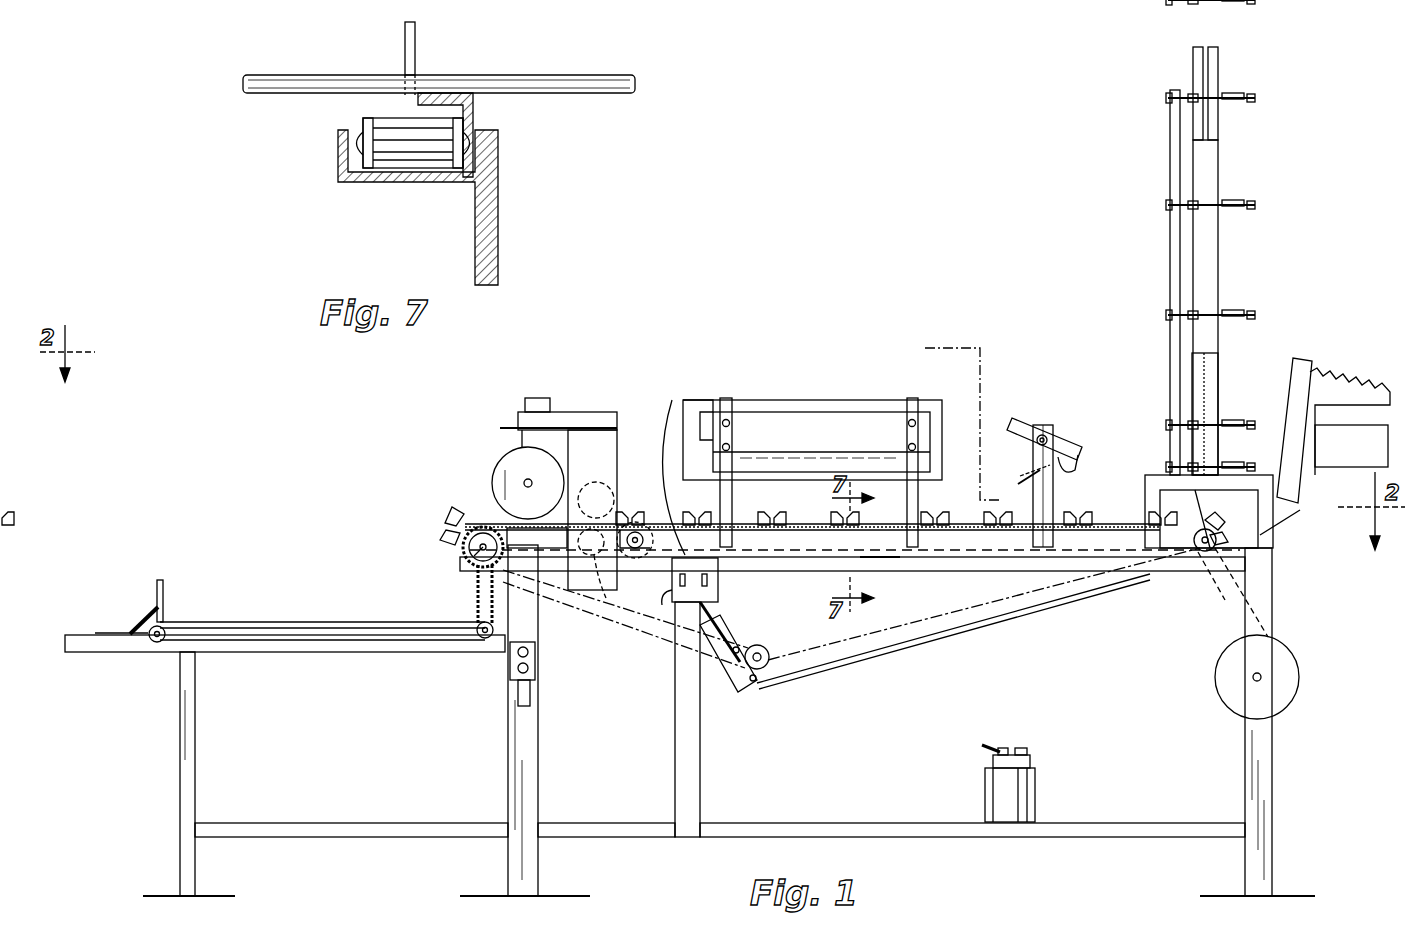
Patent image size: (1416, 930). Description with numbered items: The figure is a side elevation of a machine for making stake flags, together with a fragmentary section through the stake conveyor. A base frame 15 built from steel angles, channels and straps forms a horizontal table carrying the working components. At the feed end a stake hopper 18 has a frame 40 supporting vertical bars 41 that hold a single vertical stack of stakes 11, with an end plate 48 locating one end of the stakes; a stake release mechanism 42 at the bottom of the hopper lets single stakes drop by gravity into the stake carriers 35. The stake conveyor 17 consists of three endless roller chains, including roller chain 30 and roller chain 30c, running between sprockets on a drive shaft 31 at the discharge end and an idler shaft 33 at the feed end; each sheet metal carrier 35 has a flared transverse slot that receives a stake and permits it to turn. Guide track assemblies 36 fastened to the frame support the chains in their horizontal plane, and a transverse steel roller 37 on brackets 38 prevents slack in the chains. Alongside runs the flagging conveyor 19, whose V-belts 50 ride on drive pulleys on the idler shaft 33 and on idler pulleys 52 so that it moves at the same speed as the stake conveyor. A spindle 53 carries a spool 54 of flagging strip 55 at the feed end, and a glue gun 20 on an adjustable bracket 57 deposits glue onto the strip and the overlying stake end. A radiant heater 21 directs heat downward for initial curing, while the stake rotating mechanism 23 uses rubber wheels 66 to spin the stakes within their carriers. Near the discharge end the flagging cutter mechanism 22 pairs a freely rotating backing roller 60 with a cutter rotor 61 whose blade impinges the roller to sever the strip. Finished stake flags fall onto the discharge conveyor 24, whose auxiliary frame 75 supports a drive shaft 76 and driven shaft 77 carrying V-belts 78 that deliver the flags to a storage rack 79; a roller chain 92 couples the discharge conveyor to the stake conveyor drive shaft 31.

In FIG. 7, the stake 11 is at (580, 75).
In FIG. 1, the stake 11 is at (1205, 385).
In FIG. 1, the base frame 15 is at (1280, 758).
In FIG. 1, the stake conveyor 17 is at (437, 518).
In FIG. 1, the stake hopper 18 is at (1186, 274).
In FIG. 1, the flagging conveyor 19 is at (965, 540).
In FIG. 1, the glue gun 20 is at (1027, 418).
In FIG. 1, the heater 21 is at (803, 392).
In FIG. 1, the flagging cutter mechanism 22 is at (622, 410).
In FIG. 1, the stake rotating mechanism 23 is at (546, 490).
In FIG. 1, the discharge conveyor 24 is at (285, 705).
In FIG. 7, the roller chain 30 is at (368, 128).
In FIG. 1, the roller chain 30c is at (465, 545).
In FIG. 1, the drive shaft 31 is at (470, 563).
In FIG. 1, the idler shaft 33 is at (1204, 552).
In FIG. 7, the stake carrier 35 is at (415, 45).
In FIG. 1, the stake carrier 35 is at (768, 514).
In FIG. 7, the guide track assembly 36 is at (498, 215).
In FIG. 1, the transverse steel roller 37 is at (766, 650).
In FIG. 1, the bracket 38 is at (740, 692).
In FIG. 1, the hopper frame 40 is at (1170, 172).
In FIG. 1, the vertical bar 41 is at (1195, 60).
In FIG. 1, the stake release mechanism 42 is at (1343, 365).
In FIG. 1, the end plate 48 is at (1210, 248).
In FIG. 1, the V-belt 50 is at (883, 560).
In FIG. 1, the idler pulley 52 is at (640, 524).
In FIG. 1, the spindle 53 is at (1252, 677).
In FIG. 1, the spool 54 is at (1257, 677).
In FIG. 1, the flagging strip 55 is at (1272, 635).
In FIG. 1, the adjustable bracket 57 is at (1048, 428).
In FIG. 1, the backing roller 60 is at (606, 598).
In FIG. 1, the cutter rotor 61 is at (605, 472).
In FIG. 1, the rubber wheel 66 is at (500, 485).
In FIG. 1, the auxiliary frame 75 is at (183, 705).
In FIG. 1, the drive shaft 76 is at (480, 640).
In FIG. 1, the driven shaft 77 is at (155, 644).
In FIG. 1, the V-belt 78 is at (330, 592).
In FIG. 1, the storage rack 79 is at (149, 602).
In FIG. 1, the roller chain 92 is at (476, 588).